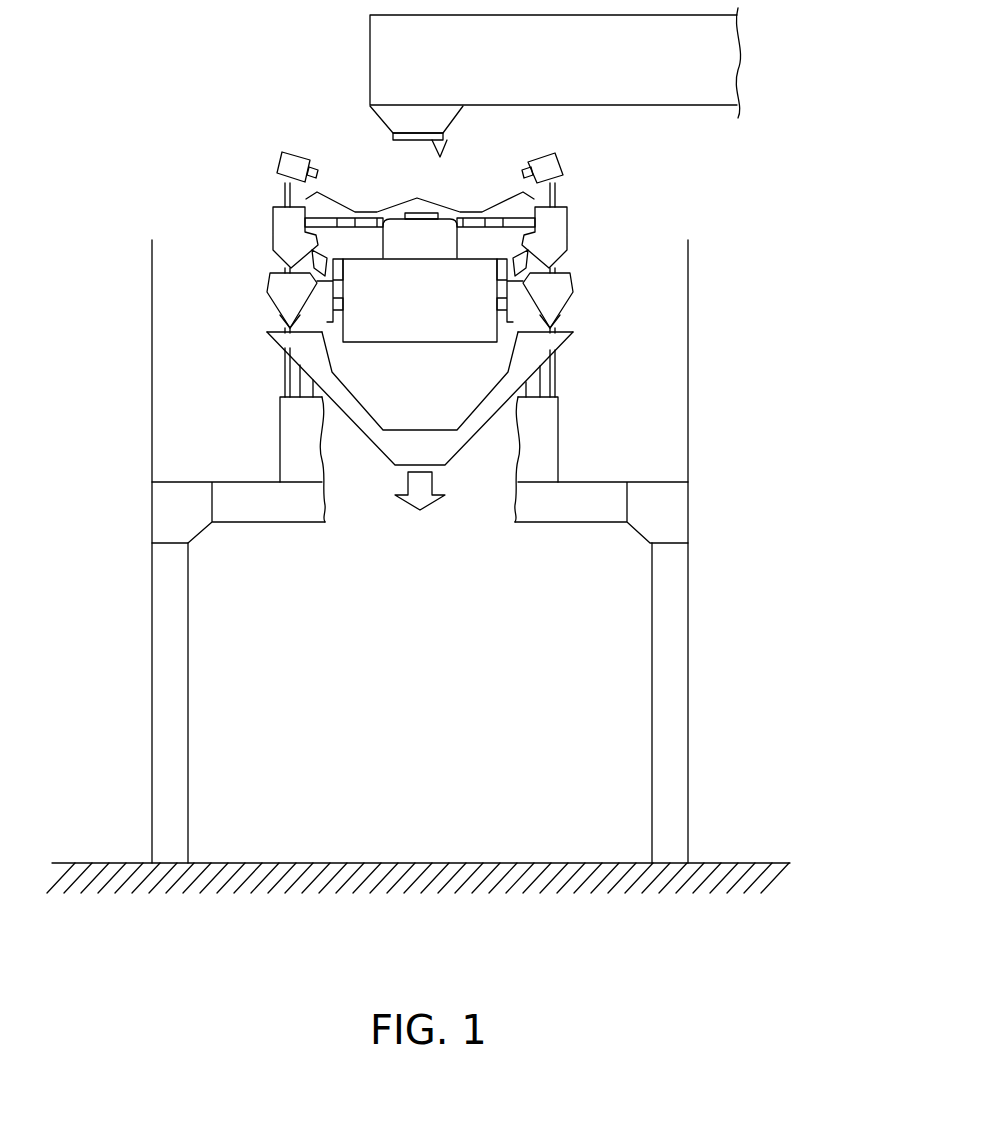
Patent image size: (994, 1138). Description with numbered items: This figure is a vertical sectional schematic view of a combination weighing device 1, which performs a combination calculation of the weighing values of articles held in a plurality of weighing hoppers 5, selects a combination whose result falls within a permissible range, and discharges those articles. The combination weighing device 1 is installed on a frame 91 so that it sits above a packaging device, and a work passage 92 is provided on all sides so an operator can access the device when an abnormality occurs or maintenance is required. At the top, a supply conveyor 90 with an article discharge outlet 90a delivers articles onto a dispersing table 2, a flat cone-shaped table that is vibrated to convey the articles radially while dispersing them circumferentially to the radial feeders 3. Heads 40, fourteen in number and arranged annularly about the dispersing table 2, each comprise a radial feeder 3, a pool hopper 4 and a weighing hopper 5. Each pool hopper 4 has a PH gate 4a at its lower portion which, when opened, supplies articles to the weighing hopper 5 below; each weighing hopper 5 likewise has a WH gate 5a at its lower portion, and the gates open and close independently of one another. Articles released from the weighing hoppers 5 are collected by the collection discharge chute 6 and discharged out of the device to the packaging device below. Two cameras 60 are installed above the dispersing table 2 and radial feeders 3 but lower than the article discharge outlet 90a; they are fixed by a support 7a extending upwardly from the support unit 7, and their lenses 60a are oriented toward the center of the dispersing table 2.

The combination weighing device 1 is at (644, 193).
The dispersing table 2 is at (405, 200).
The radial feeder 3 is at (283, 195).
The pool hopper 4 is at (272, 218).
The PH gate 4a is at (280, 268).
The weighing hopper 5 is at (268, 288).
The WH gate 5a is at (283, 328).
The collection discharge chute 6 is at (364, 431).
The support unit 7 is at (280, 442).
The support 7a is at (284, 377).
The head 40 is at (264, 210).
The camera 60 is at (282, 158).
The lens 60a is at (315, 168).
The supply conveyor 90 is at (367, 62).
The article discharge outlet 90a is at (444, 142).
The frame 91 is at (192, 667).
The work passage 92 is at (210, 482).